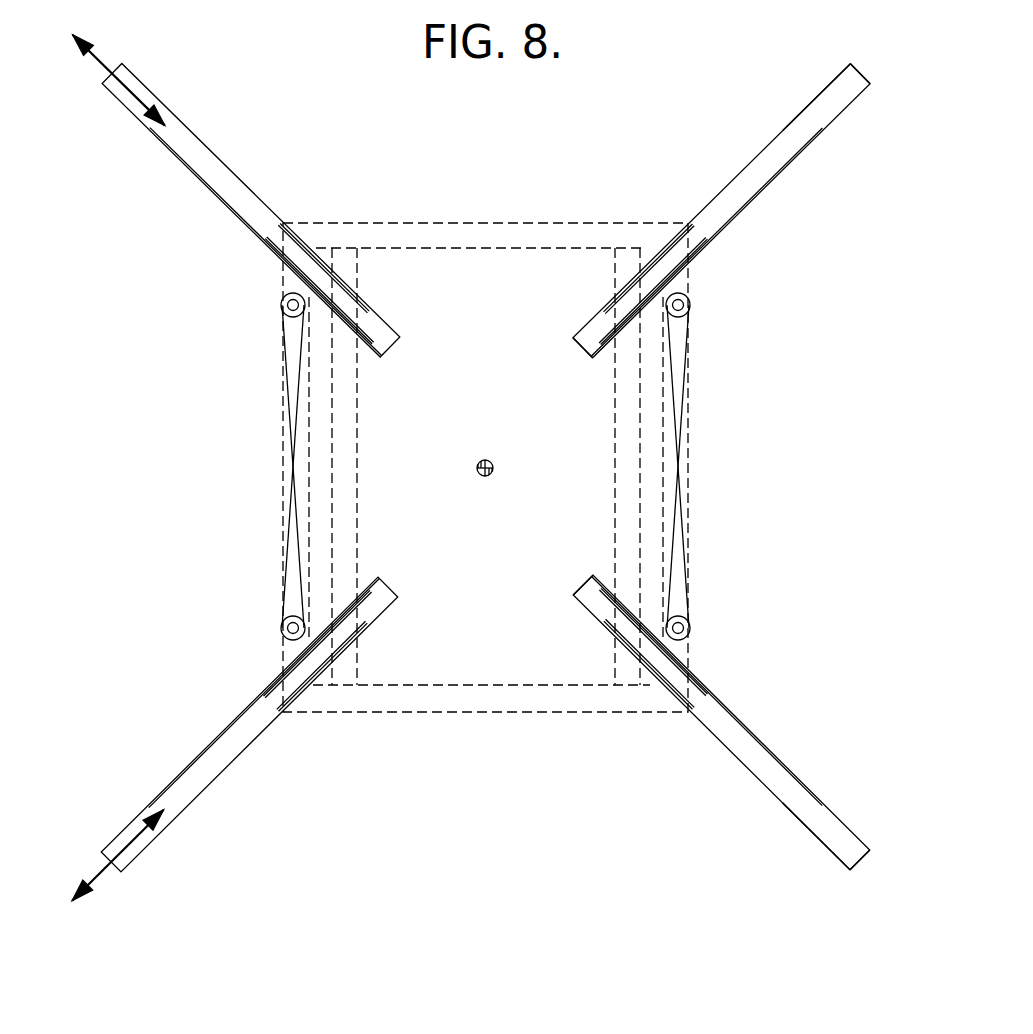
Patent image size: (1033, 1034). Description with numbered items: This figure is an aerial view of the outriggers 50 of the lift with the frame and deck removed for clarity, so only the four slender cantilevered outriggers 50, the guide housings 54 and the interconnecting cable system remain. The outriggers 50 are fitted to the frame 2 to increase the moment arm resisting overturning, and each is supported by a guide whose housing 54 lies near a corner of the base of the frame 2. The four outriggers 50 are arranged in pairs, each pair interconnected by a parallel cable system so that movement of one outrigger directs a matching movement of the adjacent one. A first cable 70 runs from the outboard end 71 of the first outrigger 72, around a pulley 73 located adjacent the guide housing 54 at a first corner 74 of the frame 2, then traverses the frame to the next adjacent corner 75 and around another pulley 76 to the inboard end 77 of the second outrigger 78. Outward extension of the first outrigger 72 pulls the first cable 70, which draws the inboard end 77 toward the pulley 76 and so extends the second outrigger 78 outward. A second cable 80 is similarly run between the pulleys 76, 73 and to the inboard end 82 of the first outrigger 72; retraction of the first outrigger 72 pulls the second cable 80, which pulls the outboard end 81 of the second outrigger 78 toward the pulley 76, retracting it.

The frame 2 is at (530, 223).
The outriggers 50 is at (222, 193).
The housing 54 is at (673, 240).
The first cable 70 is at (650, 320).
The outboard end 71 is at (870, 852).
The first outrigger 72 is at (222, 765).
The pulley 73 is at (692, 637).
The first corner 74 is at (683, 722).
The next adjacent corner 75 is at (690, 200).
The pulley 76 is at (692, 295).
The inboard end 77 is at (590, 356).
The second outrigger 78 is at (212, 158).
The second cable 80 is at (760, 200).
The outboard end 81 is at (872, 84).
The inboard end 82 is at (590, 574).